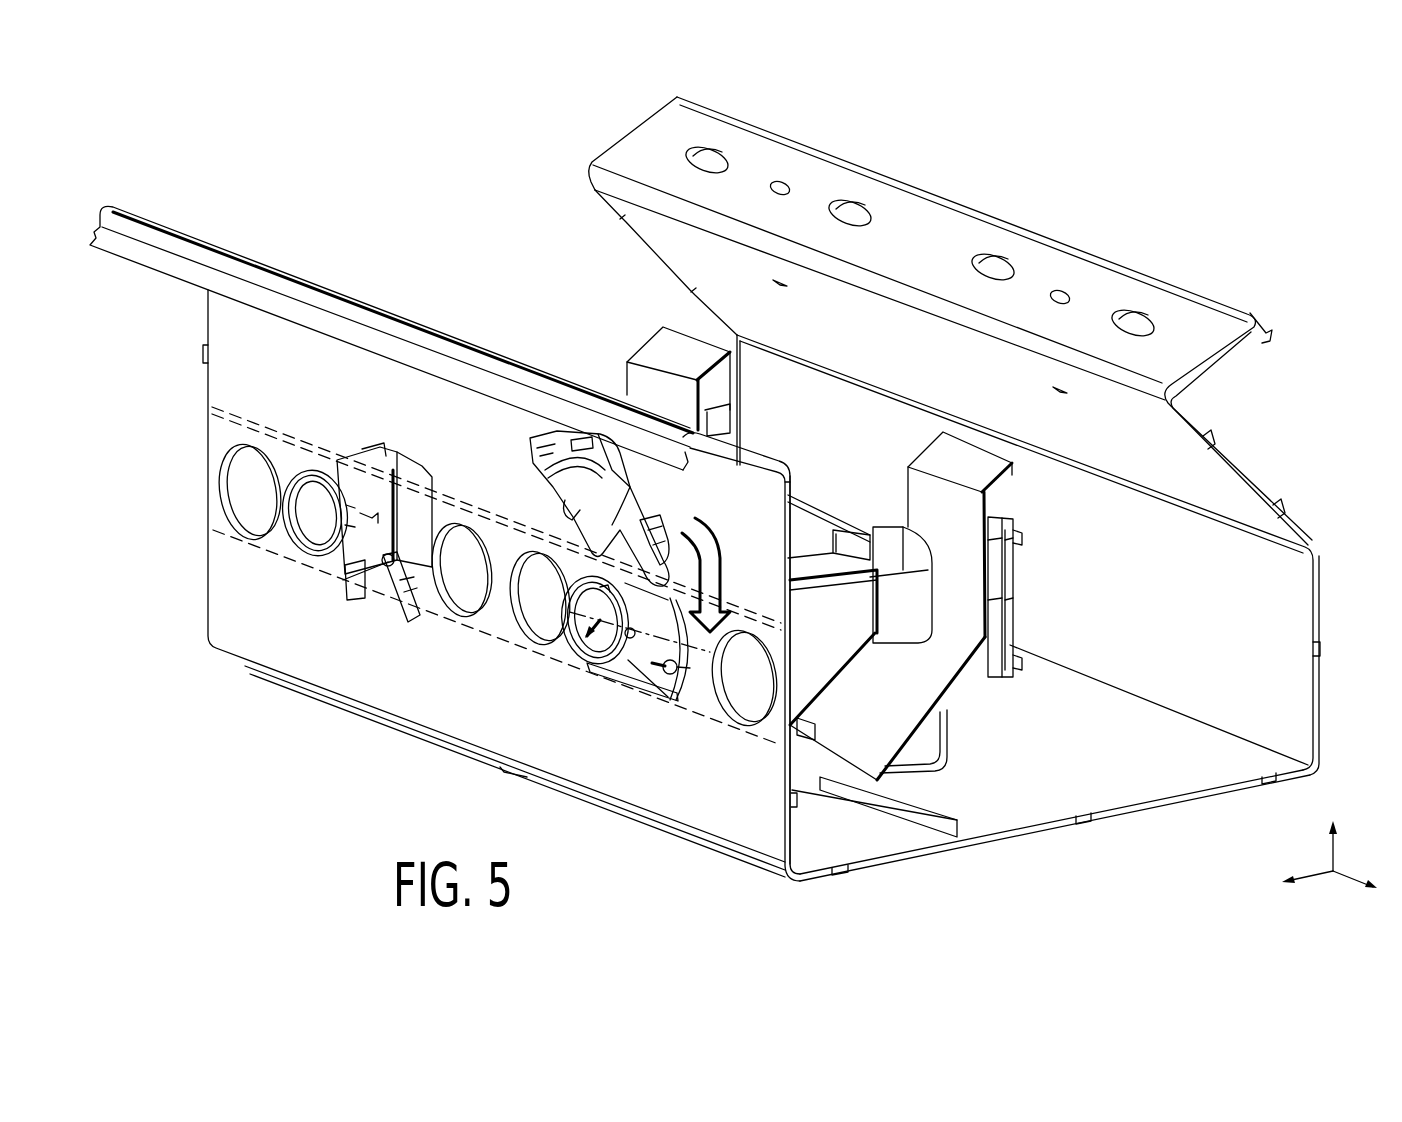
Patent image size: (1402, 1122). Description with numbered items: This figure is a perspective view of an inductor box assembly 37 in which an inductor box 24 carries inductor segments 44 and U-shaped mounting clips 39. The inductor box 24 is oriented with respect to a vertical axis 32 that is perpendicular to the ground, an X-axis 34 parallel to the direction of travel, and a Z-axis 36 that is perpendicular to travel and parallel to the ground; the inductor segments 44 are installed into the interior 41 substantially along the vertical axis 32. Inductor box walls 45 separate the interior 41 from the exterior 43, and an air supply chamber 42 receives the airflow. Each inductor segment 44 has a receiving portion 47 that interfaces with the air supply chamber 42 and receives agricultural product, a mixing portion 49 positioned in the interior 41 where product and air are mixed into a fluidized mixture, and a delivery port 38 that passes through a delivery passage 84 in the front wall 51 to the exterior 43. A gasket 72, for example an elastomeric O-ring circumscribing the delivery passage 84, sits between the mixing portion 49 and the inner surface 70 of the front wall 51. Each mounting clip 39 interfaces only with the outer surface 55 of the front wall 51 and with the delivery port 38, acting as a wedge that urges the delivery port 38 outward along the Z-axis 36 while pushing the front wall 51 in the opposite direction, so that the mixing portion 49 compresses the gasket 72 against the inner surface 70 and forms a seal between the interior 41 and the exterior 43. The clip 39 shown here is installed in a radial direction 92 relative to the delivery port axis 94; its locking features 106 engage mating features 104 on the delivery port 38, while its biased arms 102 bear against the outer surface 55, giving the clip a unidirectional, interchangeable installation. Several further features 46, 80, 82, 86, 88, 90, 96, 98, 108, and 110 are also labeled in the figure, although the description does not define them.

The inductor box 24 is at (1210, 290).
The vertical axis 32 is at (1334, 868).
The X-axis 34 is at (1344, 878).
The Z-axis 36 is at (1316, 870).
The inductor box assembly 37 is at (950, 308).
The delivery port 38 is at (474, 575).
The mounting clip 39 is at (539, 495).
The interior 41 is at (907, 373).
The air supply chamber 42 is at (730, 566).
The exterior 43 is at (143, 563).
The inductor segment 44 is at (1040, 597).
The inductor box wall 45 is at (1165, 802).
The support bracket 46 is at (902, 620).
The receiving portion 47 is at (920, 488).
The mixing portion 49 is at (818, 505).
The front wall 51 is at (790, 845).
The outer surface 55 is at (782, 600).
The inner surface 70 is at (799, 603).
The gasket 72 is at (803, 734).
The channel 80 is at (977, 589).
The second connector 82 is at (580, 667).
The delivery passage 84 is at (467, 617).
The block 86 is at (642, 350).
The first connector 88 is at (300, 487).
The first clamp 90 is at (417, 470).
The radial direction 92 is at (607, 670).
The delivery port axis 94 is at (707, 660).
The second clamp 96 is at (618, 481).
The rotation direction 98 is at (705, 529).
The biased arms 102 is at (397, 612).
The mating features 104 is at (357, 597).
The locking features 106 is at (567, 513).
The tab 108 is at (562, 447).
The slot 110 is at (540, 452).